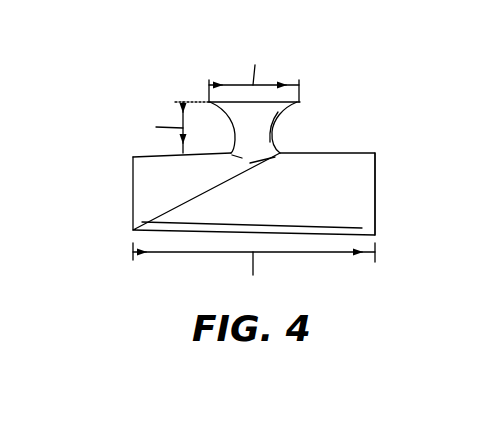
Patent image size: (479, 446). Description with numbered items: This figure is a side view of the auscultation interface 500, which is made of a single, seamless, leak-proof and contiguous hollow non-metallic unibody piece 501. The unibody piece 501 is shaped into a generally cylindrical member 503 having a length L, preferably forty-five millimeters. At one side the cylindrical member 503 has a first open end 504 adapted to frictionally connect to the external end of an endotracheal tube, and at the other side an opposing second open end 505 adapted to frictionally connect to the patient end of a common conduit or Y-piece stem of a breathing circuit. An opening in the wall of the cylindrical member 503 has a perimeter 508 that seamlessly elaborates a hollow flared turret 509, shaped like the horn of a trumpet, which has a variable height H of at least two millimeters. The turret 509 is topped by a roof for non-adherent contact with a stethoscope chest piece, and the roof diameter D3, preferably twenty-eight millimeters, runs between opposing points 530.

The auscultation interface 500 is at (259, 166).
The unibody hollow non-metallic piece 501 is at (254, 194).
The cylindrical member 503 is at (352, 213).
The first open end 504 is at (132, 188).
The second open end 505 is at (376, 160).
The perimeter of opening 508 is at (255, 162).
The hollow flared turret 509 is at (258, 126).
The opposing points 530 is at (300, 102).